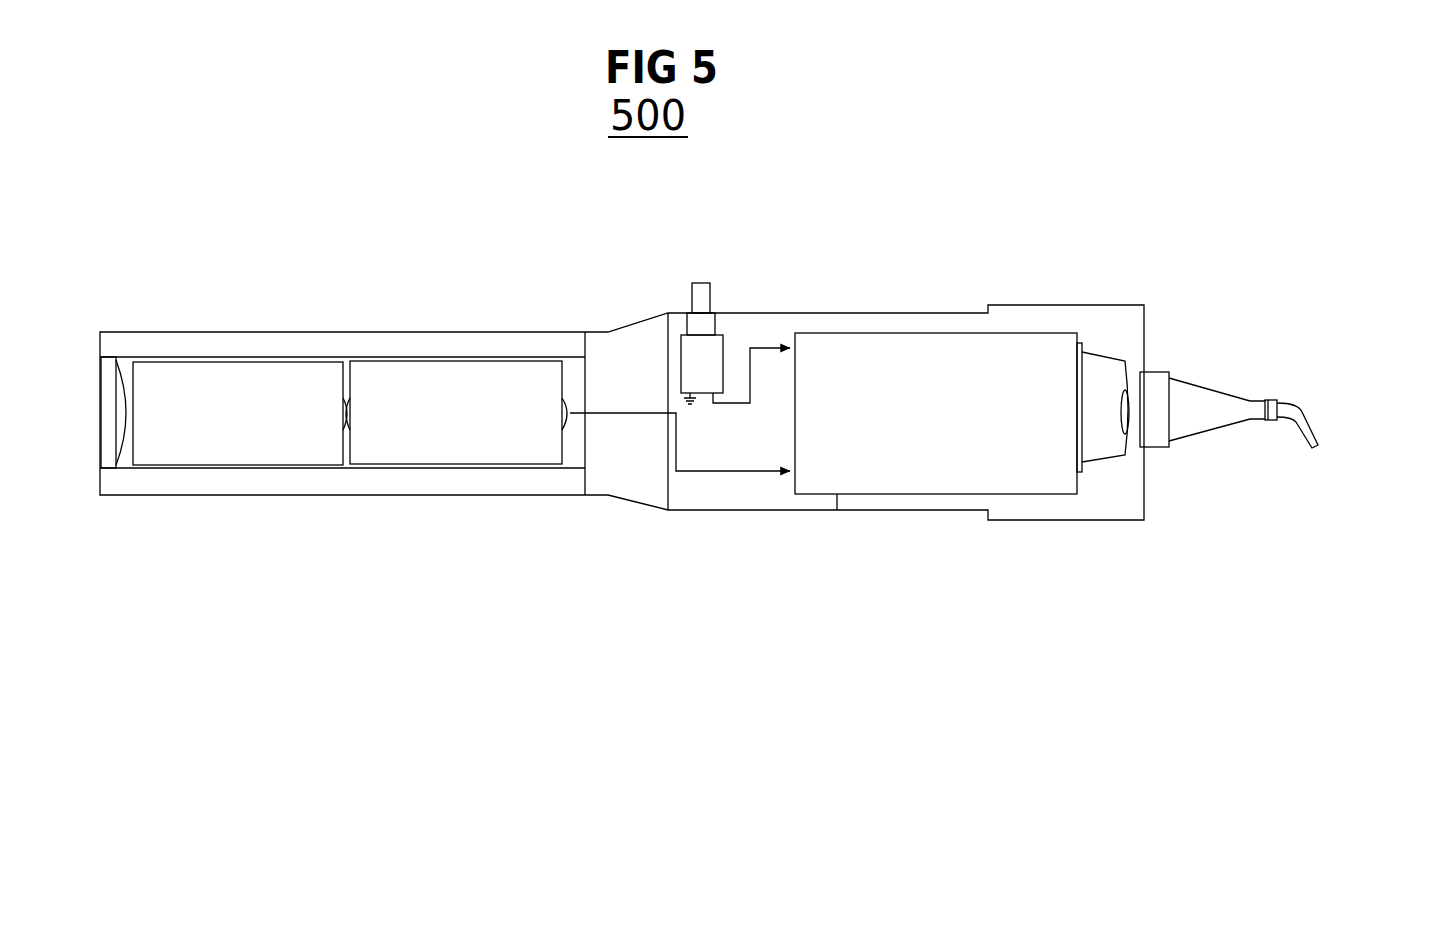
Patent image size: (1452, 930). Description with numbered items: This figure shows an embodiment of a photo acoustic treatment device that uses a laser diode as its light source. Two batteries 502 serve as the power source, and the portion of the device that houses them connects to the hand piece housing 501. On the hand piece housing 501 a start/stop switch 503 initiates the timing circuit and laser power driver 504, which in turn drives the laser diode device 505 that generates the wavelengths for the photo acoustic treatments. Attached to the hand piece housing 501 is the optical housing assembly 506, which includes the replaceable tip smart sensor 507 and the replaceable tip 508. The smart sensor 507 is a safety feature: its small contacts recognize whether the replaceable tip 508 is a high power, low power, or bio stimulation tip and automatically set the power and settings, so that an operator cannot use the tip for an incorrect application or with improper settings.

The hand piece housing 501 is at (853, 527).
The batteries 502 is at (427, 459).
The start/stop switch 503 is at (688, 295).
The timing circuit and laser power driver 504 is at (841, 329).
The laser diode device 505 is at (1103, 347).
The optical housing assembly 506 is at (1212, 385).
The replaceable tip smart sensor 507 is at (1267, 427).
The replaceable tip 508 is at (1314, 410).